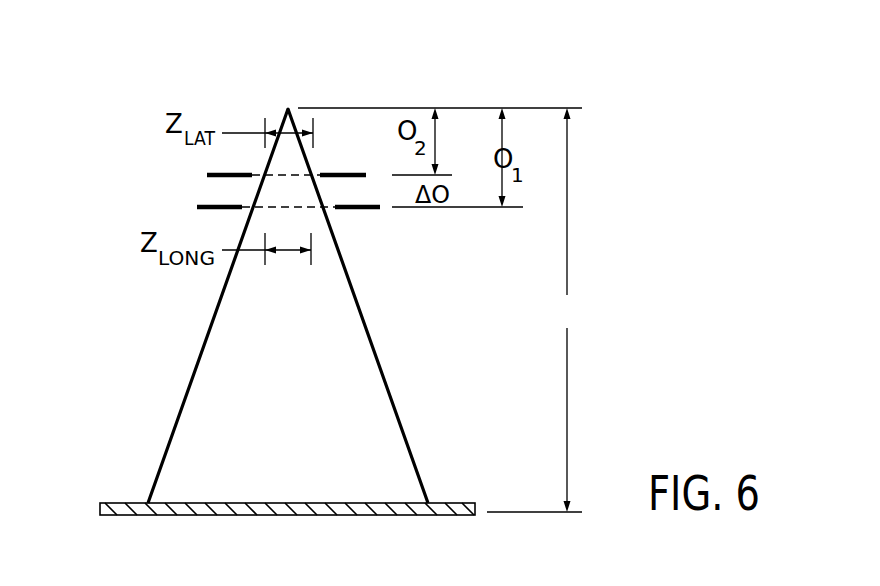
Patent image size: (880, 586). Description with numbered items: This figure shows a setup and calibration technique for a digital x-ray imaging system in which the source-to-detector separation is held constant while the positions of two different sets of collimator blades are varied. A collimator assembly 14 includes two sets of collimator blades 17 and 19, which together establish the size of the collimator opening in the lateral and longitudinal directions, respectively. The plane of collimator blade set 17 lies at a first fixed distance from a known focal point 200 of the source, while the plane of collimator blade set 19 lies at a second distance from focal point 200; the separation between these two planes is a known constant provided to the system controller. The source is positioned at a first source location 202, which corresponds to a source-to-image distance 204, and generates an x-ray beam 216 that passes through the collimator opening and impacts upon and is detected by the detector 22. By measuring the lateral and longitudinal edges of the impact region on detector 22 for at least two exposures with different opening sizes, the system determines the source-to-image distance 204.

The collimator assembly 14 is at (212, 205).
The collimator blade set 17 is at (197, 207).
The collimator blade set 19 is at (207, 175).
The detector 22 is at (125, 502).
The focal point 200 is at (289, 106).
The first source location 202 is at (600, 107).
The SID 204 is at (582, 284).
The x-ray beam 216 is at (357, 303).